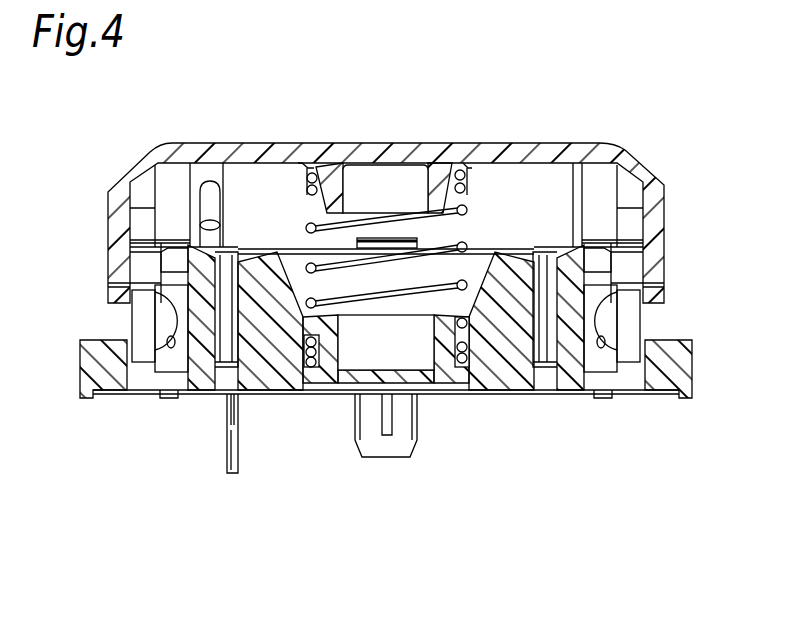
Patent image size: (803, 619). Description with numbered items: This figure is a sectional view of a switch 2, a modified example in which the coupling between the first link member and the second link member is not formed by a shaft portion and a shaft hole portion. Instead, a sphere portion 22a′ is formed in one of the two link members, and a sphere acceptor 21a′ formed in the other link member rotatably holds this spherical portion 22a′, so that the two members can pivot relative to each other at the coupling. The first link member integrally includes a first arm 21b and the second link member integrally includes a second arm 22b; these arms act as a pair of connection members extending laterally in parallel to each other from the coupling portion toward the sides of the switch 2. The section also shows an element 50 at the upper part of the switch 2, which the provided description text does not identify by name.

The switch 2 is at (688, 128).
The housing cover 50 is at (483, 144).
The second arm 22b is at (124, 312).
The sphere portion 22a′ is at (168, 330).
The first arm 21b is at (170, 380).
The sphere acceptor 21a′ is at (180, 333).